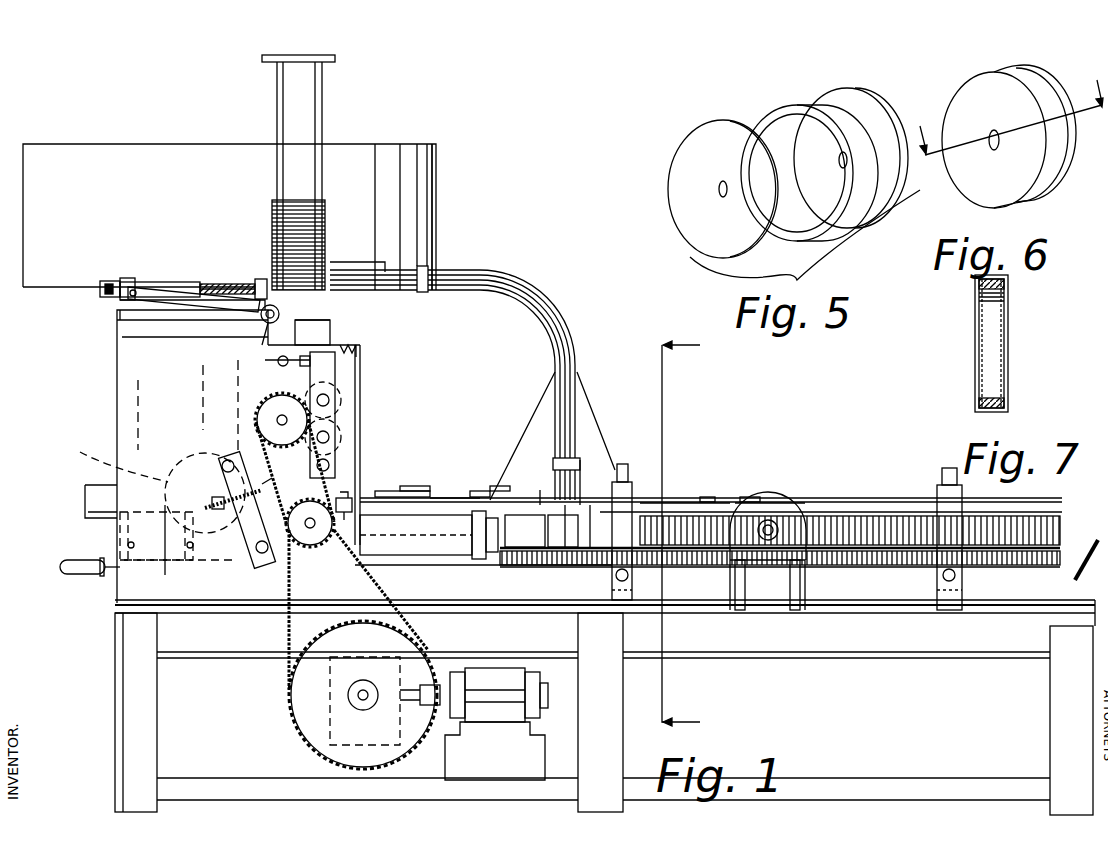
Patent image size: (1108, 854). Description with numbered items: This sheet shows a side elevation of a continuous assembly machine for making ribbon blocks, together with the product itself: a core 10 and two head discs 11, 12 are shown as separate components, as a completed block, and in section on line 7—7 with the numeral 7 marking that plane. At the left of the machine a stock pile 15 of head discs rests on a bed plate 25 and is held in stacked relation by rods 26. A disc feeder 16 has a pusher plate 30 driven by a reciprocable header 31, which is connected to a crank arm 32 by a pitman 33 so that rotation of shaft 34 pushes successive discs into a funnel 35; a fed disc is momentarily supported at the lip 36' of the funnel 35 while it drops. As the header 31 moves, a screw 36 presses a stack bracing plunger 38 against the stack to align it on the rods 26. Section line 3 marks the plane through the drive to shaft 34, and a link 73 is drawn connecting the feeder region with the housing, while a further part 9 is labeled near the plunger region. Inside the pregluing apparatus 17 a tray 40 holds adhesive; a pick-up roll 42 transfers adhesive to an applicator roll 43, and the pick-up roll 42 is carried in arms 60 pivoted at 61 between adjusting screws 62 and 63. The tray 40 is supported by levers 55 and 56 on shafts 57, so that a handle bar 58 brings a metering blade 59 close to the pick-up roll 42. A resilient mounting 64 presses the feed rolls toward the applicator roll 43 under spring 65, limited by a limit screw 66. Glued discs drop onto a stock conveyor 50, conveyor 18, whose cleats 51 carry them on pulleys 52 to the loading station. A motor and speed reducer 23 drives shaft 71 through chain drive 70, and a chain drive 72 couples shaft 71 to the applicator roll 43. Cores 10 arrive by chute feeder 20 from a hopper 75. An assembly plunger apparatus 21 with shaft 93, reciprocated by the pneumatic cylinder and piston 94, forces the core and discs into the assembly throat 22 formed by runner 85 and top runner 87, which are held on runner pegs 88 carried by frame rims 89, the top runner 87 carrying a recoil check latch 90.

In FIG. 1, the section line 3— 3 is at (688, 532).
In FIG. 6, the section line 7— 7 is at (1005, 106).
In FIG. 1, the cap assembly 9 is at (558, 552).
In FIG. 1, the core 10 is at (586, 560).
In FIG. 5, the core 10 is at (758, 112).
In FIG. 6, the core 10 is at (1050, 92).
In FIG. 7, the core 10 is at (1003, 279).
In FIG. 1, the head disc 11 is at (540, 498).
In FIG. 5, the head disc 11 is at (688, 140).
In FIG. 6, the head disc 11 is at (966, 92).
In FIG. 7, the head disc 11 is at (978, 313).
In FIG. 1, the head disc 12 is at (585, 498).
In FIG. 5, the head disc 12 is at (853, 98).
In FIG. 6, the head disc 12 is at (1068, 150).
In FIG. 7, the head disc 12 is at (1006, 318).
In FIG. 1, the stock pile of head discs 15 is at (326, 210).
In FIG. 1, the disc feeder 16 is at (155, 282).
In FIG. 1, the pregluing apparatus 17 is at (360, 384).
In FIG. 1, the conveyor 18 is at (450, 498).
In FIG. 1, the chute feeder 20 is at (558, 322).
In FIG. 1, the assembly plunger apparatus 21 is at (515, 498).
In FIG. 1, the assembly throat 22 is at (680, 515).
In FIG. 1, the motor and speed reducer 23 is at (490, 724).
In FIG. 1, the bed plate 25 is at (120, 321).
In FIG. 1, the rods 26 is at (277, 164).
In FIG. 1, the pusher plate 30 is at (160, 318).
In FIG. 1, the header 31 is at (135, 281).
In FIG. 1, the crank arm 32 is at (256, 284).
In FIG. 1, the pitman 33 is at (221, 272).
In FIG. 1, the shaft 34 is at (252, 318).
In FIG. 1, the funnel 35 is at (335, 340).
In FIG. 1, the screw 36 is at (98, 277).
In FIG. 1, the lip of the funnel 36' is at (348, 303).
In FIG. 1, the stack bracing plunger 38 is at (222, 282).
In FIG. 1, the tray 40 is at (85, 496).
In FIG. 1, the pick-up roll 42 is at (118, 460).
In FIG. 1, the applicator roll 43 is at (278, 418).
In FIG. 1, the stock conveyor 50 is at (420, 498).
In FIG. 1, the cleat 51 is at (752, 500).
In FIG. 1, the stock conveyor pulley 52 is at (790, 516).
In FIG. 1, the lever 55 is at (156, 536).
In FIG. 1, the lever 56 is at (176, 541).
In FIG. 1, the shaft 57 is at (161, 540).
In FIG. 1, the handle bar 58 is at (95, 562).
In FIG. 1, the metering blade 59 is at (242, 500).
In FIG. 1, the arm 60 is at (218, 462).
In FIG. 1, the pivot 61 is at (262, 555).
In FIG. 1, the adjusting screw 62 is at (205, 504).
In FIG. 1, the adjusting screw 63 is at (267, 483).
In FIG. 1, the resilient mounting 64 is at (336, 421).
In FIG. 1, the spring 65 is at (352, 346).
In FIG. 1, the limit screw 66 is at (298, 364).
In FIG. 1, the chain drive 70 is at (290, 687).
In FIG. 1, the shaft 71 is at (312, 530).
In FIG. 1, the chain drive 72 is at (352, 494).
In FIG. 1, the pivot link 73 is at (268, 325).
In FIG. 1, the hopper 75 is at (432, 207).
In FIG. 1, the runner 85 is at (840, 562).
In FIG. 1, the top runner 87 is at (888, 512).
In FIG. 1, the runner peg 88 is at (945, 470).
In FIG. 1, the frame rim 89 is at (940, 492).
In FIG. 1, the recoil check latch 90 is at (622, 468).
In FIG. 1, the shaft 93 is at (522, 552).
In FIG. 1, the cylinder and piston 94 is at (442, 560).